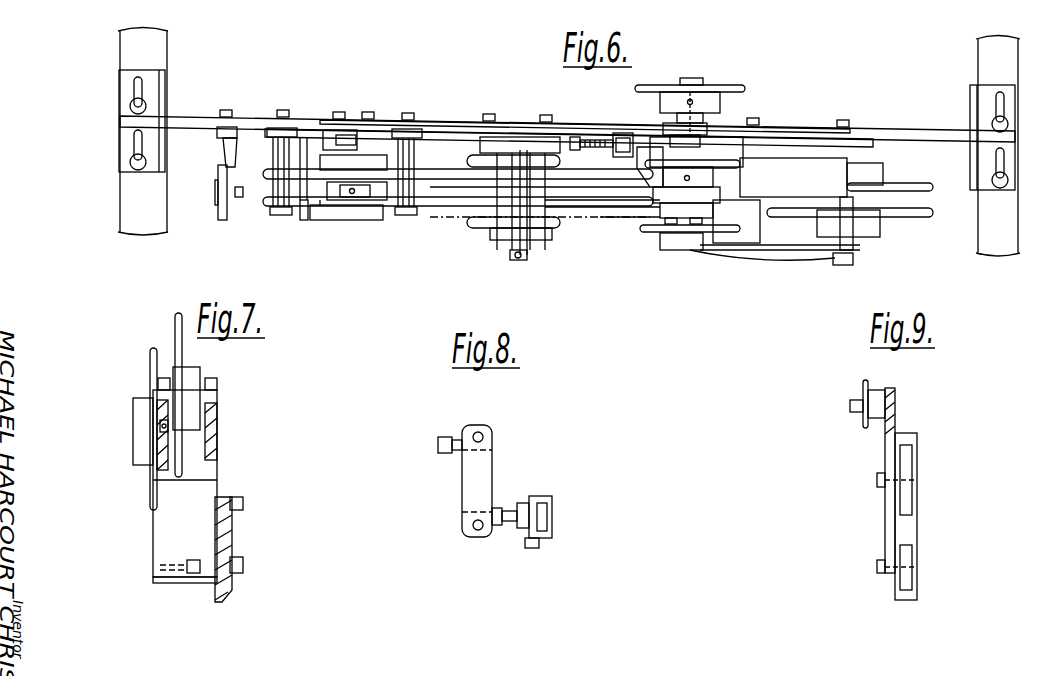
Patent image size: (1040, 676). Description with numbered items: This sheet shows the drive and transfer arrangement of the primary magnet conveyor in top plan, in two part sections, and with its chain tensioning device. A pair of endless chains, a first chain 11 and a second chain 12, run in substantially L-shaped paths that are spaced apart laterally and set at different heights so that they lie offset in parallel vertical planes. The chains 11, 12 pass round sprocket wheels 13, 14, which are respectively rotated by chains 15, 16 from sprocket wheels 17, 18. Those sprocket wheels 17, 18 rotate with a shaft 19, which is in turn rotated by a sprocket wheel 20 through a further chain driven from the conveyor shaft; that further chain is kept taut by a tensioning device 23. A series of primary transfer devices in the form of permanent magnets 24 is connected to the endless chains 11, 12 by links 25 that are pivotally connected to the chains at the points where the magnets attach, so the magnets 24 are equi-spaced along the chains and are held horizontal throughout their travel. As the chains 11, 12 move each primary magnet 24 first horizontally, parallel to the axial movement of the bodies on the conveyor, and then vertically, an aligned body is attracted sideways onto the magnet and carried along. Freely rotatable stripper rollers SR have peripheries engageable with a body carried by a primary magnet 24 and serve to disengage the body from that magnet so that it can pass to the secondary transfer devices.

In FIG. 6, the stripper rollers SR is at (305, 215).
In FIG. 6, the first chain 11 is at (580, 190).
In FIG. 8, the first chain 11 is at (467, 432).
In FIG. 6, the second chain 12 is at (594, 208).
In FIG. 8, the second chain 12 is at (500, 508).
In FIG. 6, the sprocket wheel 13 is at (457, 178).
In FIG. 6, the sprocket wheel 14 is at (458, 207).
In FIG. 6, the chain 15 is at (630, 160).
In FIG. 6, the chain 16 is at (628, 222).
In FIG. 6, the sprocket wheel 17 is at (732, 167).
In FIG. 6, the sprocket wheel 18 is at (727, 233).
In FIG. 6, the shaft 19 is at (722, 112).
In FIG. 6, the sprocket wheel 20 is at (745, 88).
In FIG. 9, the tensioning device 23 is at (883, 441).
In FIG. 8, the primary magnets 24 is at (538, 506).
In FIG. 8, the links 25 is at (487, 458).